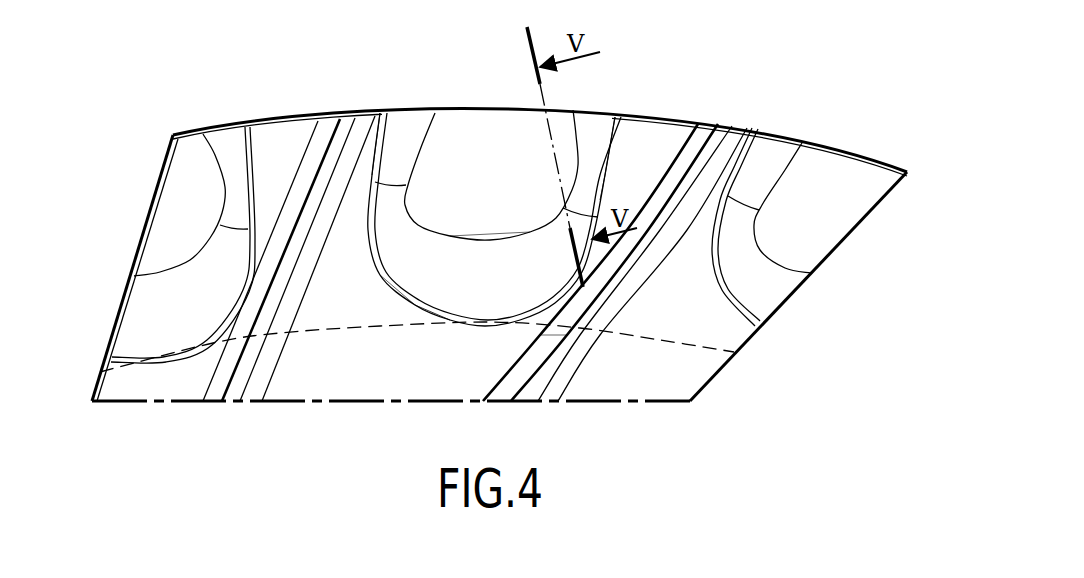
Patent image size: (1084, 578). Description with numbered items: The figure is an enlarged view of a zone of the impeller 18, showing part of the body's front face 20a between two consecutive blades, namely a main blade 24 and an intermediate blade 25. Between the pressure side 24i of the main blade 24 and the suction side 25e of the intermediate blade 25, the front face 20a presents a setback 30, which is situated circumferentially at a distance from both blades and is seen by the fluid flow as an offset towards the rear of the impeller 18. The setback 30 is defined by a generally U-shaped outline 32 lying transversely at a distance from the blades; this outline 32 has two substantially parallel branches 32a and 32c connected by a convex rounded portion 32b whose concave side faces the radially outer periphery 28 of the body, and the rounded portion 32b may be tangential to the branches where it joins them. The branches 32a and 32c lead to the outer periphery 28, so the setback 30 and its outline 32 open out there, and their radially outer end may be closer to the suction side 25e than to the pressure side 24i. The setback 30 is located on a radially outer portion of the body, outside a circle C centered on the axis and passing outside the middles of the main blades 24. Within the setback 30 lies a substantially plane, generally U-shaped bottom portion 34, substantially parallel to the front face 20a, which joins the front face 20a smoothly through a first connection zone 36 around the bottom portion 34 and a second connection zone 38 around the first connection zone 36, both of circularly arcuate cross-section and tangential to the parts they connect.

The impeller 18 is at (750, 106).
The front face 20a is at (380, 388).
The main blade 24 is at (553, 357).
The pressure side 24i is at (524, 373).
The intermediate blade 25 is at (249, 347).
The suction side 25e is at (254, 387).
The radially outer periphery 28 is at (612, 116).
The setback 30 is at (412, 305).
The outline 32 is at (623, 134).
The first branch 32a is at (368, 180).
The rounded portion 32b is at (393, 282).
The second branch 32c is at (605, 176).
The bottom portion 34 is at (493, 132).
The first connection zone 36 is at (407, 125).
The second connection zone 38 is at (380, 112).
The circle C is at (670, 338).